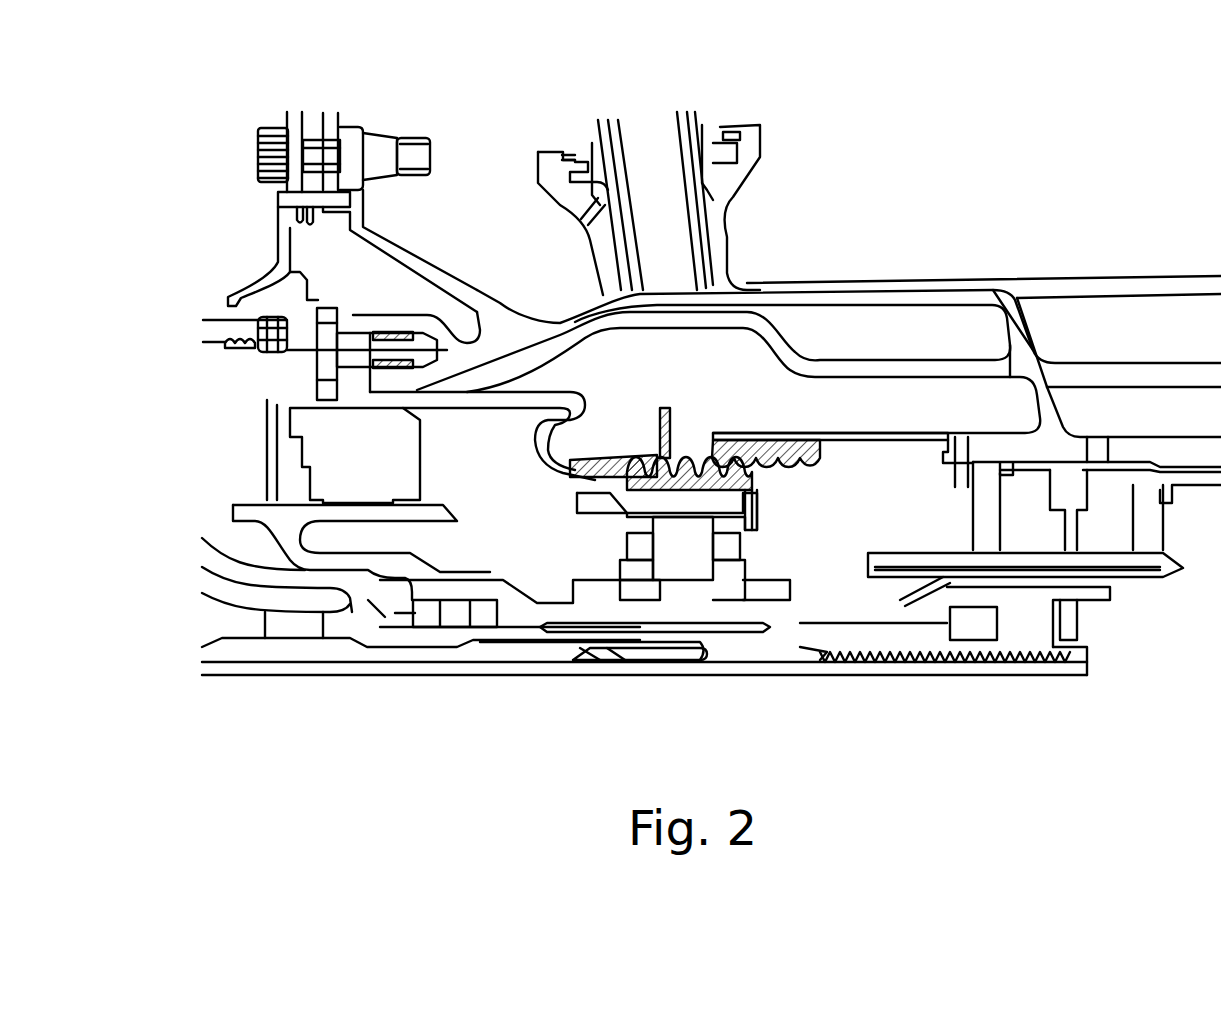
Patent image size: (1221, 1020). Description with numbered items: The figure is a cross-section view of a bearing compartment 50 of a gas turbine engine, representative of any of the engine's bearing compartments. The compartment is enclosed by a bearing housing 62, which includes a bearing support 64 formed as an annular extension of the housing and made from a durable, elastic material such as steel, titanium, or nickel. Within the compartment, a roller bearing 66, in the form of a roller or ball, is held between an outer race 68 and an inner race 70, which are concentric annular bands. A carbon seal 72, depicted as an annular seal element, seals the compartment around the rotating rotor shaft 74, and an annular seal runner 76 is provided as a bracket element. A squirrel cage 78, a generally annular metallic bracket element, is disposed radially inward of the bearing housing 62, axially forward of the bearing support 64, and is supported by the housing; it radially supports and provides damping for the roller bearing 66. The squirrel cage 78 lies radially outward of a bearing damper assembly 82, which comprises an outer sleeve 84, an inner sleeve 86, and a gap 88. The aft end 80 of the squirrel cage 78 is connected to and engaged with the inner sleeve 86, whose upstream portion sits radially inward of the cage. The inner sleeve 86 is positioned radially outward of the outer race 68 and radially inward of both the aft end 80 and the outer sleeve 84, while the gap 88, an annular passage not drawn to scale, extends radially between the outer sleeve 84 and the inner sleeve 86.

The bearing compartment 50 is at (888, 232).
The bearing housing 62 is at (1078, 362).
The bearing support 64 is at (882, 432).
The roller bearing 66 is at (677, 552).
The outer race 68 is at (627, 510).
The inner race 70 is at (730, 585).
The carbon seal 72 is at (338, 442).
The rotor shaft 74 is at (252, 623).
The seal runner 76 is at (280, 517).
The squirrel cage 78 is at (503, 410).
The aft end 80 is at (622, 452).
The bearing damper assembly 82 is at (565, 501).
The outer sleeve 84 is at (805, 455).
The inner sleeve 86 is at (760, 480).
The gap 88 is at (740, 452).